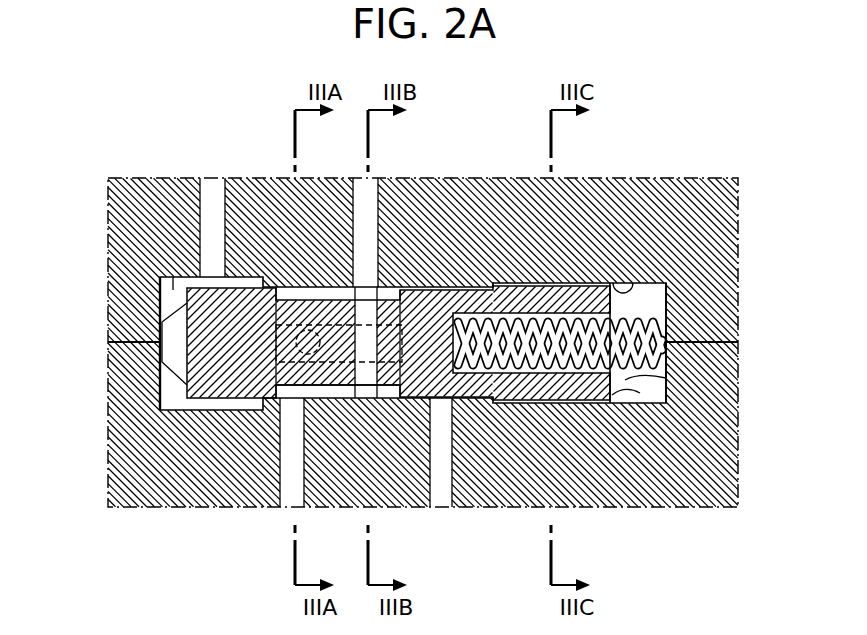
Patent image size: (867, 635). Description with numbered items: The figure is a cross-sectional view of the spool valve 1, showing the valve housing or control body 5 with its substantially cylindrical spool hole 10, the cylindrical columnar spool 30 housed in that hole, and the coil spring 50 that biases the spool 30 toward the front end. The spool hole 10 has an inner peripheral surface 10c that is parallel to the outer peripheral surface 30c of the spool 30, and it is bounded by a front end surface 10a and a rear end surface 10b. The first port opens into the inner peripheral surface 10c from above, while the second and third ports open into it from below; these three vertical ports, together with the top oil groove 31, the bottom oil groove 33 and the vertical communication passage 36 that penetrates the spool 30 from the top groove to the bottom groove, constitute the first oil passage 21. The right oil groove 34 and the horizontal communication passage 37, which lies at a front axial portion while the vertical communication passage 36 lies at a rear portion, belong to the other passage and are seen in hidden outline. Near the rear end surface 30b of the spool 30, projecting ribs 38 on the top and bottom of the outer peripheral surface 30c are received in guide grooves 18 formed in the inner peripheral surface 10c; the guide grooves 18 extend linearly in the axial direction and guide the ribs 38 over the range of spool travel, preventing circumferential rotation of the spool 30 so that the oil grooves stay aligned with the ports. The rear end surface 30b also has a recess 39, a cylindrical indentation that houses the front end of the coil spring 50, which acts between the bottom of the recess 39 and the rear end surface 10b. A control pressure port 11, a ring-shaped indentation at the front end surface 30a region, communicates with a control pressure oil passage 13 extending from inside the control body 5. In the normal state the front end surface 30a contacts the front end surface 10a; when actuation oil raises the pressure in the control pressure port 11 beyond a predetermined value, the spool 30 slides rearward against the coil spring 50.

The spool valve 1 is at (753, 98).
The valve housing (control body) 5 is at (708, 212).
The spool hole 10 is at (622, 283).
The front end surface of the spool hole 10a is at (170, 298).
The rear end surface of the spool hole 10b is at (668, 397).
The inner peripheral surface of the spool hole 10c is at (447, 287).
The control pressure port 11 is at (165, 256).
The control pressure oil passage 13 is at (215, 222).
The guide grooves 18 is at (668, 305).
The first oil passage 21 is at (360, 213).
The spool 30 is at (477, 278).
The front end surface of the spool 30a is at (160, 350).
The rear end surface of the spool 30b is at (645, 410).
The outer peripheral surface of the spool 30c is at (428, 300).
The top oil groove (first oil groove) 31 is at (292, 285).
The bottom oil groove (third oil groove) 33 is at (376, 346).
The right oil groove (fourth oil groove) 34 is at (298, 340).
The vertical communication passage (first communication passage) 36 is at (395, 399).
The horizontal communication passage (second communication passage) 37 is at (278, 352).
The projecting ribs (anti-rotation ribs) 38 is at (548, 283).
The recess 39 is at (668, 382).
The coil spring (biasing unit) 50 is at (660, 320).